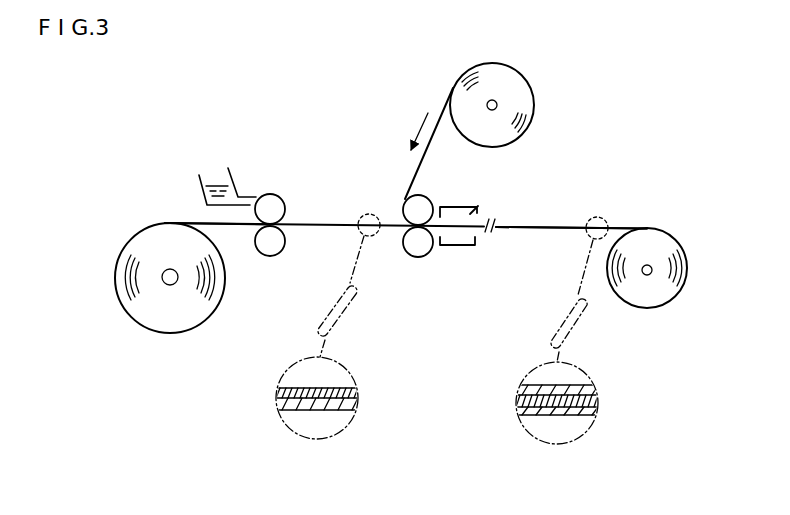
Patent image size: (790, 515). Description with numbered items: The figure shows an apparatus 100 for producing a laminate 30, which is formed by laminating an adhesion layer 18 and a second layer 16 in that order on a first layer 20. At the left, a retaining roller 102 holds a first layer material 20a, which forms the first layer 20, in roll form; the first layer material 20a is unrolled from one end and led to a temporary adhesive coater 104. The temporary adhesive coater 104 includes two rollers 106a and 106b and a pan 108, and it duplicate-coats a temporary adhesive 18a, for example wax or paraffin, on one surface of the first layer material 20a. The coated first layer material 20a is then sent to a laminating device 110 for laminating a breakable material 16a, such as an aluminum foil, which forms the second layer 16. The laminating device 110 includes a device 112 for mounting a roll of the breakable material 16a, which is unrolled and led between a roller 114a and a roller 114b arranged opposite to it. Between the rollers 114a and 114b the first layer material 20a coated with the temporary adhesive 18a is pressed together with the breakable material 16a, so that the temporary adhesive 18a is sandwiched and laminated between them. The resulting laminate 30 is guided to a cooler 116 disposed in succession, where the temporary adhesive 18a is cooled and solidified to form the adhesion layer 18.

The apparatus 100 is at (350, 79).
The retaining roller 102 is at (171, 286).
The temporary adhesive coater 104 is at (216, 150).
The roller 106a is at (265, 208).
The roller 106b is at (270, 256).
The pan 108 is at (198, 176).
The laminating device 110 is at (400, 233).
The device for mounting a roll 112 is at (456, 95).
The roller 114a is at (430, 198).
The roller 114b is at (426, 259).
The cooler 116 is at (478, 207).
The second layer 16 is at (596, 391).
The breakable material 16a is at (408, 184).
The adhesion layer 18 is at (356, 392).
The temporary adhesive 18a is at (216, 186).
The first layer 20 is at (356, 408).
The first layer material 20a is at (185, 222).
The laminate 30 is at (522, 229).